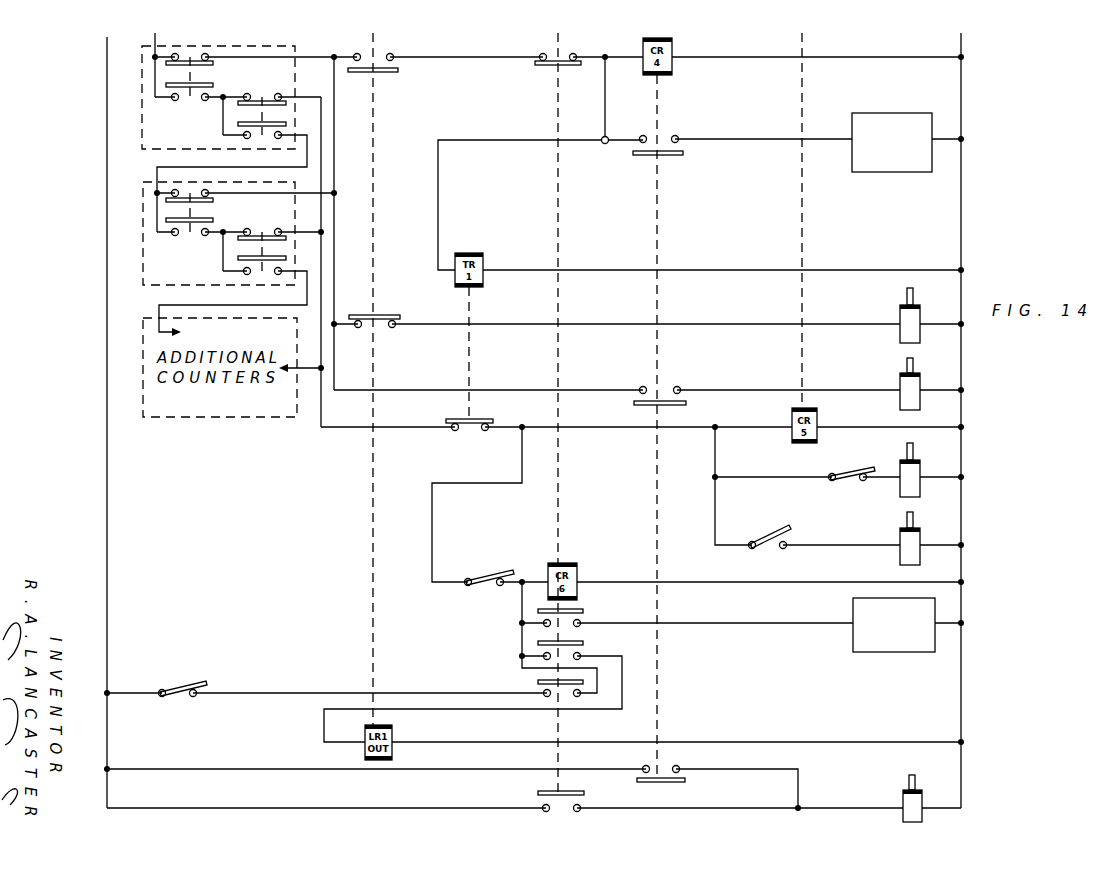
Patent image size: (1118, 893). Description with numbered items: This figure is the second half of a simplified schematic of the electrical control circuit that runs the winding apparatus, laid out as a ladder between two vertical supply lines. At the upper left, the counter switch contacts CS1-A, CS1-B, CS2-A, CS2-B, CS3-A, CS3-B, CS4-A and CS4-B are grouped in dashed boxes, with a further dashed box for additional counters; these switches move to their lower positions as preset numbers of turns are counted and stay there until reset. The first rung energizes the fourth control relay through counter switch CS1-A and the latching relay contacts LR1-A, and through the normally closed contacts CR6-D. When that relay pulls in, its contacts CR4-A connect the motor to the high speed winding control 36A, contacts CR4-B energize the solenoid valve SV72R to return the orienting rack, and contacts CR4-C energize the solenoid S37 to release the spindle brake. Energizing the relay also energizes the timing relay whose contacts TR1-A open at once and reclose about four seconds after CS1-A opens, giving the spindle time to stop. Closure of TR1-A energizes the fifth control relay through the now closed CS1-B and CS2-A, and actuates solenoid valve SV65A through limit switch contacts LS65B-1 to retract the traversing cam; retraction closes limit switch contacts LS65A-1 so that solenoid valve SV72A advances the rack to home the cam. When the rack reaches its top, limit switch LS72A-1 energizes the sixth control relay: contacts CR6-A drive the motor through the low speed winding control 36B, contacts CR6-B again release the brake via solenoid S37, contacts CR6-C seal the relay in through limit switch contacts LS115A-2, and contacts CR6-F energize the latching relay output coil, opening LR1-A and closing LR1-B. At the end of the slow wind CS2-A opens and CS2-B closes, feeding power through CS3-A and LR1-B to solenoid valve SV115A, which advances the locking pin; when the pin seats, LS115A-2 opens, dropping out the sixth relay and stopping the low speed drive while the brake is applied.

The high speed winding control 36A is at (892, 142).
The low speed winding control 36B is at (894, 625).
The counter switch CS1-A is at (165, 65).
The counter switch CS1-B is at (165, 87).
The counter switch CS2-A is at (244, 104).
The counter switch CS2-B is at (244, 130).
The counter switch CS3-A is at (165, 203).
The counter switch CS3-B is at (165, 224).
The counter switch CS4-A is at (244, 239).
The counter switch CS4-B is at (244, 265).
The latching relay contacts LR1-A is at (383, 76).
The latching relay contacts LR1-B is at (380, 328).
The relay contacts CR6-D is at (538, 80).
The relay contacts CR4-A is at (668, 160).
The relay contacts CR4-B is at (664, 392).
The relay contacts CR4-C is at (672, 783).
The time delay relay contacts TR1-A is at (450, 420).
The solenoid valve SV115A is at (900, 312).
The solenoid valve SV72R is at (900, 383).
The solenoid valve SV72A is at (901, 470).
The solenoid valve SV65A is at (900, 538).
The limit switch contacts LS65A-1 is at (850, 469).
The limit switch contacts LS65B-1 is at (762, 537).
The limit switch LS72A-1 is at (488, 554).
The limit switch contacts LS115A-2 is at (190, 664).
The relay contacts CR6-A is at (578, 620).
The relay contacts CR6-B is at (545, 797).
The relay contacts CR6-C is at (545, 686).
The relay contacts CR6-F is at (578, 655).
The solenoid S37 is at (904, 802).